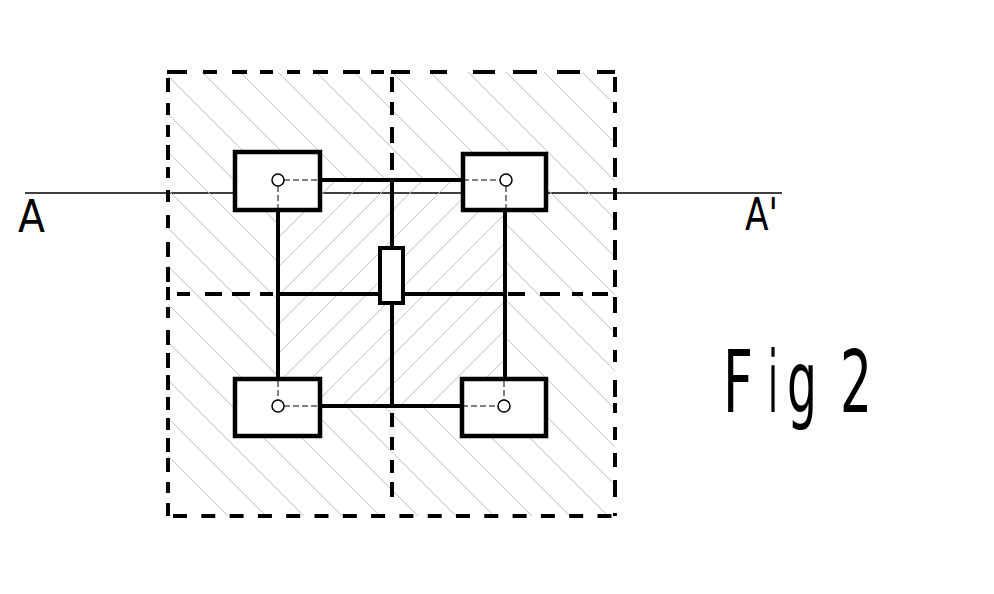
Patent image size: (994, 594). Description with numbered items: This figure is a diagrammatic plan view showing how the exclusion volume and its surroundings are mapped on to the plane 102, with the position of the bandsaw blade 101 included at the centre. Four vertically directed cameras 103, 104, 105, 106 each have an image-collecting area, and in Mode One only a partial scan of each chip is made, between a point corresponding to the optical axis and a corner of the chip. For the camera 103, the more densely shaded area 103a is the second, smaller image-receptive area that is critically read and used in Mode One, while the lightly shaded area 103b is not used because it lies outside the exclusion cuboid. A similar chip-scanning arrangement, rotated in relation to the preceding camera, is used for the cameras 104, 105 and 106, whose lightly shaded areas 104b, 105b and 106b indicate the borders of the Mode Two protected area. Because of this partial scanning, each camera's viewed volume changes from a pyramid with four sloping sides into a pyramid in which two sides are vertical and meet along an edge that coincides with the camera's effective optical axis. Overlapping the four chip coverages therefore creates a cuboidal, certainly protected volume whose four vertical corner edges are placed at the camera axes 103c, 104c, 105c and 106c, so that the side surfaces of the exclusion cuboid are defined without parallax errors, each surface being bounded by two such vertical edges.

The bandsaw blade 101 is at (394, 287).
The plane 102 is at (180, 488).
The camera 103 is at (292, 150).
The densely shaded area 103a is at (343, 178).
The lightly shaded area 103b is at (167, 247).
The optical axis 103c is at (272, 172).
The camera 104 is at (495, 152).
The lightly shaded area 104b is at (617, 95).
The optical axis 104c is at (511, 178).
The camera 105 is at (525, 437).
The lightly shaded area 105b is at (600, 352).
The optical axis 105c is at (508, 410).
The camera 106 is at (243, 438).
The lightly shaded area 106b is at (168, 332).
The optical axis 106c is at (273, 410).